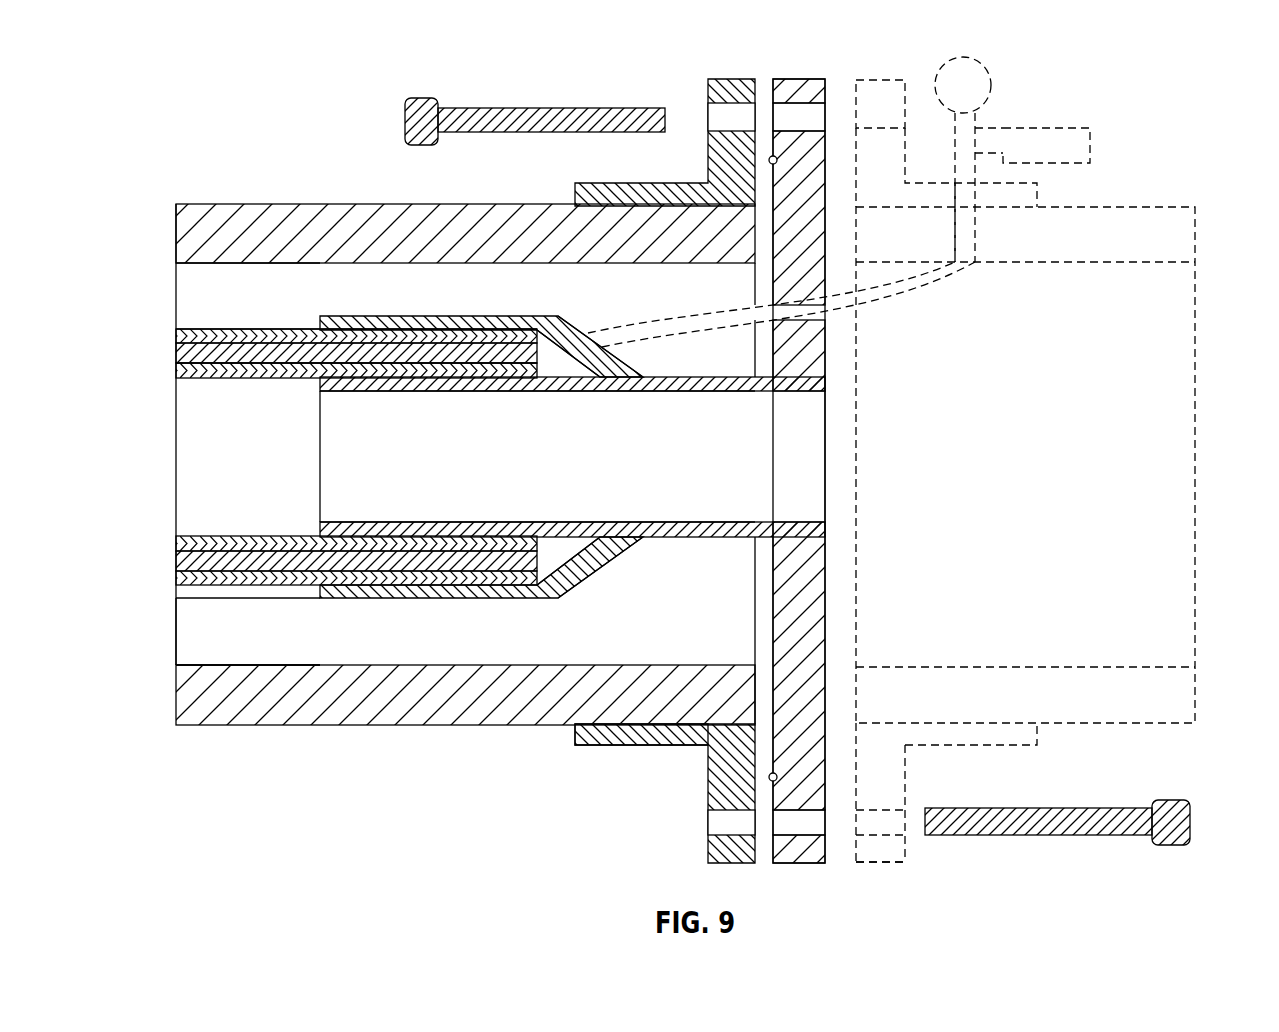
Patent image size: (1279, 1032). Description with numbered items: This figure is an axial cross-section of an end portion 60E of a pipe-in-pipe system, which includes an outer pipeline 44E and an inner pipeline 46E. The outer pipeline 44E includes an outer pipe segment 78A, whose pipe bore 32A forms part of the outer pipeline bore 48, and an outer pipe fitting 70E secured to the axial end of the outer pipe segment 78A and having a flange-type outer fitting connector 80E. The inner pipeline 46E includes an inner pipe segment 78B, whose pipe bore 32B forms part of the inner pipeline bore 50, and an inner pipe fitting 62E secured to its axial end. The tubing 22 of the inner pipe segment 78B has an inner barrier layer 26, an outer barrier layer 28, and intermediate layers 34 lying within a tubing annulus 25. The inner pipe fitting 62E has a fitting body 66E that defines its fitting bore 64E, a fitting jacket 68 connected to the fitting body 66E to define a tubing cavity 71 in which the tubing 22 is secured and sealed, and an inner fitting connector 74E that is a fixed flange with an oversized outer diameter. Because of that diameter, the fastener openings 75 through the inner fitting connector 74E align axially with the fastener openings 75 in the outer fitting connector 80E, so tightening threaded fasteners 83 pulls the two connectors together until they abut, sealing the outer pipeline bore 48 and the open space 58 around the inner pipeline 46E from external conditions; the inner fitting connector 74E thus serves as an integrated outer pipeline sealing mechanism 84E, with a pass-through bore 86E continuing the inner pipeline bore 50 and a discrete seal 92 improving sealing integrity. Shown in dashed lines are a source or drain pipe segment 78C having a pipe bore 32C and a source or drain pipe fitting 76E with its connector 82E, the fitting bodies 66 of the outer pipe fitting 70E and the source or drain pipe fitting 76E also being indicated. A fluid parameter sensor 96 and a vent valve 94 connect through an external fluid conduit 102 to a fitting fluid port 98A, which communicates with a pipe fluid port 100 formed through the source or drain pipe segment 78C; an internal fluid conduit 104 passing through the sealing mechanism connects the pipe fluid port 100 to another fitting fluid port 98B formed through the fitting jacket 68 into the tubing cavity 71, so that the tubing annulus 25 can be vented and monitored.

The end portion of pipe-in-pipe system 60E is at (163, 110).
The threaded fastener 83 is at (418, 98).
The outer pipe segment 78A is at (277, 204).
The outer pipeline 44E is at (408, 174).
The outer fitting connector 80E is at (710, 145).
The discrete seal 92 is at (768, 161).
The fastener opening 75 is at (733, 112).
The inner fitting connector 74E is at (793, 79).
The outer pipeline sealing mechanism 84E is at (799, 471).
The fluid parameter sensor 96 is at (985, 70).
The external fluid conduit 102 is at (985, 140).
The vent valve 94 is at (1057, 128).
The source or drain pipe segment 78C is at (1155, 205).
The fitting fluid port 98A is at (968, 207).
The pipe fluid port 100 is at (966, 252).
The internal fluid conduit 104 is at (655, 312).
The inner pipeline 46E is at (318, 310).
The inner pipe segment 78B is at (262, 328).
The outer barrier layer 28 is at (172, 334).
The tubing annulus 25 is at (174, 329).
The inner barrier layer 26 is at (172, 373).
The intermediate layer 34 is at (232, 363).
The pipe bore of inner pipe segment 32B is at (245, 475).
The inner pipeline bore 50 is at (285, 475).
The fitting body 66E is at (380, 392).
The tubing cavity 71 is at (550, 366).
The fitting fluid port 98B is at (588, 357).
The fitting bore 64E is at (515, 485).
The pass-through bore 86E is at (818, 467).
The pipe bore of source or drain pipe segment 32C is at (1050, 462).
The tubing 22 is at (174, 536).
The open space 58 is at (190, 624).
The outer pipeline bore 48 is at (290, 648).
The pipe bore of outer pipe segment 32A is at (346, 648).
The fitting jacket 68 is at (410, 599).
The inner pipe fitting 62E is at (572, 596).
The fitting body 66 is at (585, 746).
The outer pipe fitting 70E is at (695, 755).
The source or drain pipe fitting 76E is at (920, 760).
The mounting tab 82E is at (900, 864).